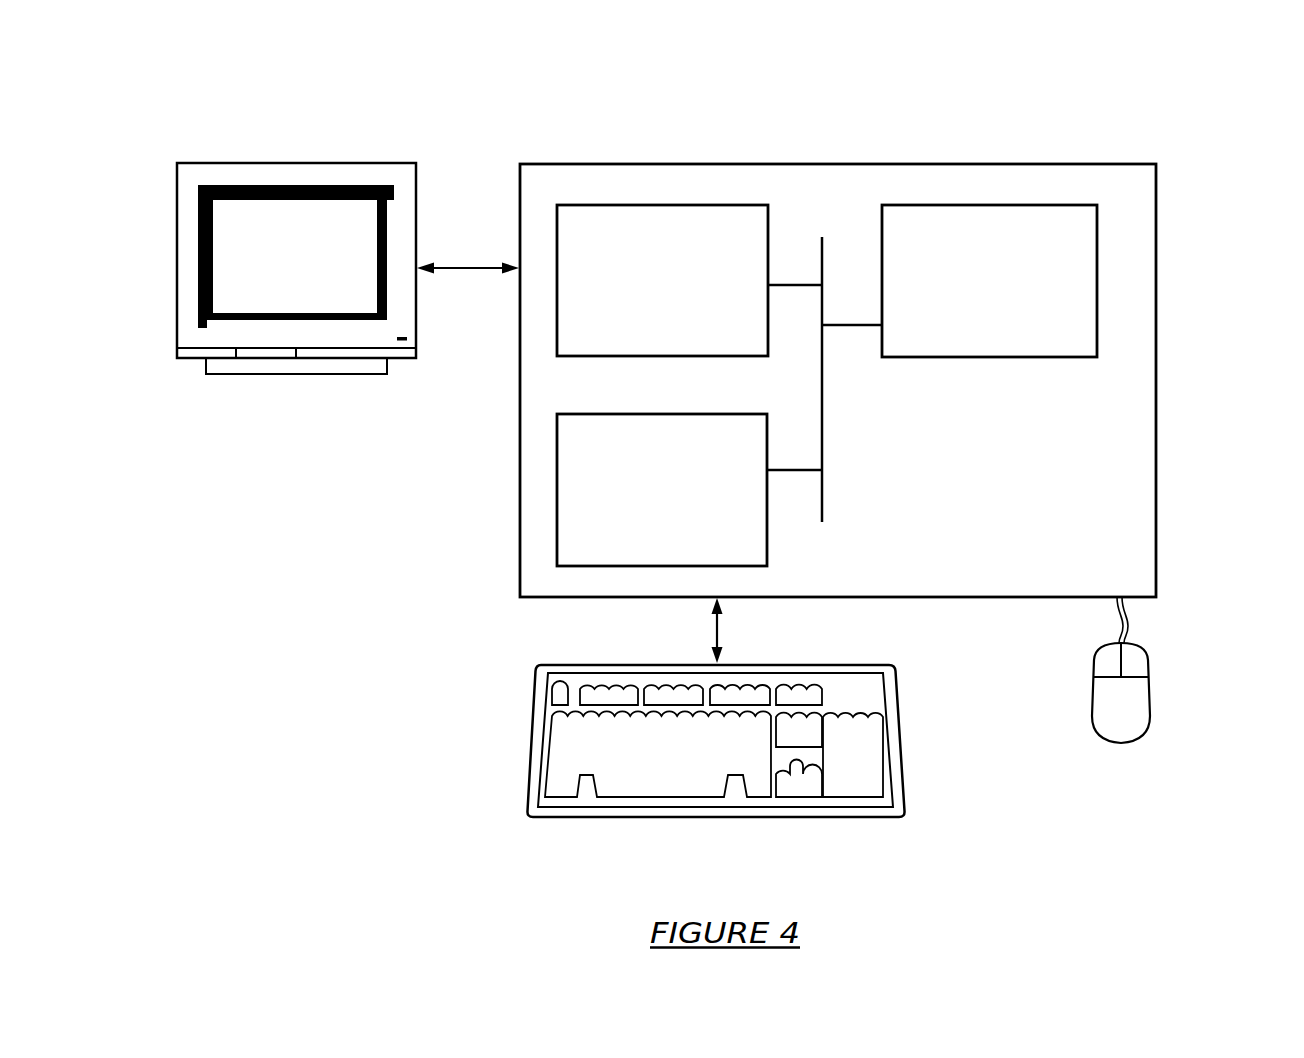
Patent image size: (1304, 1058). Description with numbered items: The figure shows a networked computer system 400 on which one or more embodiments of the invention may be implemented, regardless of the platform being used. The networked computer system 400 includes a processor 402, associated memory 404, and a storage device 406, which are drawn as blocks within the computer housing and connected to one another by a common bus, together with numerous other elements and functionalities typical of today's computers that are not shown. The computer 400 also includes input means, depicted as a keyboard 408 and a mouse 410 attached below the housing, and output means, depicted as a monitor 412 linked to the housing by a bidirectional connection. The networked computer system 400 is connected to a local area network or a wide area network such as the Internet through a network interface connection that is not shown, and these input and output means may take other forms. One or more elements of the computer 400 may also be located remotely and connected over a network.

The networked computer system 400 is at (1188, 101).
The processor 402 is at (985, 292).
The associated memory 404 is at (643, 292).
The storage device 406 is at (637, 502).
The keyboard 408 is at (630, 778).
The mouse 410 is at (1101, 712).
The monitor 412 is at (275, 272).